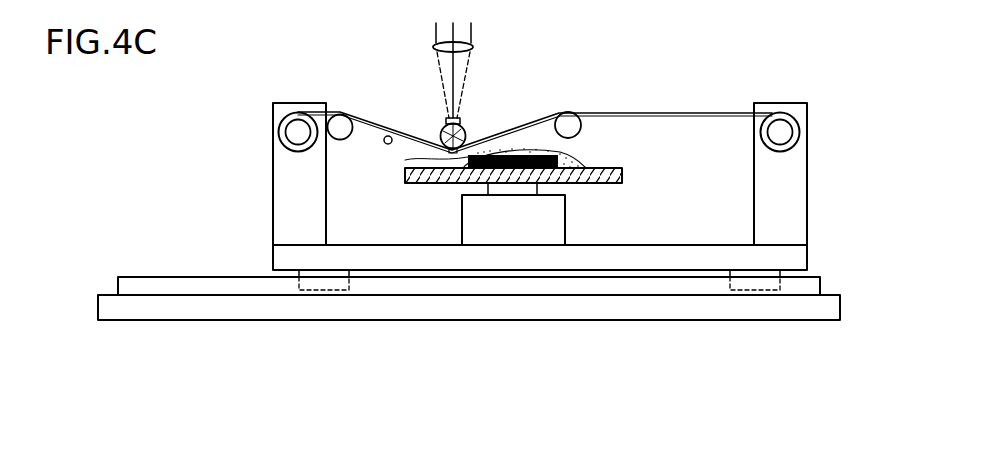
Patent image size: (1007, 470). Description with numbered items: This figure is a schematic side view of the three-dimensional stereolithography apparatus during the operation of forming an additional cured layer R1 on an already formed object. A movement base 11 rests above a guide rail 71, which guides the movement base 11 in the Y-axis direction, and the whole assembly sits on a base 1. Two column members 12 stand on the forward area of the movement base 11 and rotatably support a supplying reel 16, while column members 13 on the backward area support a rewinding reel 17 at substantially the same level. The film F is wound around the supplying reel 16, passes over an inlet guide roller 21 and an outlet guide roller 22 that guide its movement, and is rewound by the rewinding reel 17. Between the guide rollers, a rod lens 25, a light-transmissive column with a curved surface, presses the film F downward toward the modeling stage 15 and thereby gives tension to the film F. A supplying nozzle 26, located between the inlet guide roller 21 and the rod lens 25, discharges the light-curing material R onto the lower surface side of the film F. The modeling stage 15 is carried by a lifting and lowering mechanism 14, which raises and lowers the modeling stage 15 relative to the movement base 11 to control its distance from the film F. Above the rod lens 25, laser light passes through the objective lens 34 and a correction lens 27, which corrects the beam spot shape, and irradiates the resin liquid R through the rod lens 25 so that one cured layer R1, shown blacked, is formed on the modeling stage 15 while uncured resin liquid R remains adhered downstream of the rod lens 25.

The base 1 is at (132, 320).
The guide rail 71 is at (140, 277).
The movement base 11 is at (273, 256).
The column members 12 is at (273, 217).
The column members 13 is at (754, 218).
The lifting and lowering mechanism 14 is at (565, 220).
The modeling stage 15 is at (622, 179).
The supplying reel 16 is at (300, 112).
The rewinding reel 17 is at (781, 112).
The inlet guide roller 21 is at (341, 122).
The outlet guide roller 22 is at (567, 122).
The rod lens 25 is at (465, 140).
The supplying nozzle 26 is at (388, 135).
The correction lens 27 is at (461, 120).
The objective lens 34 is at (473, 47).
The film F is at (675, 112).
The light-curing material R is at (580, 161).
The cured layer R1 is at (418, 160).